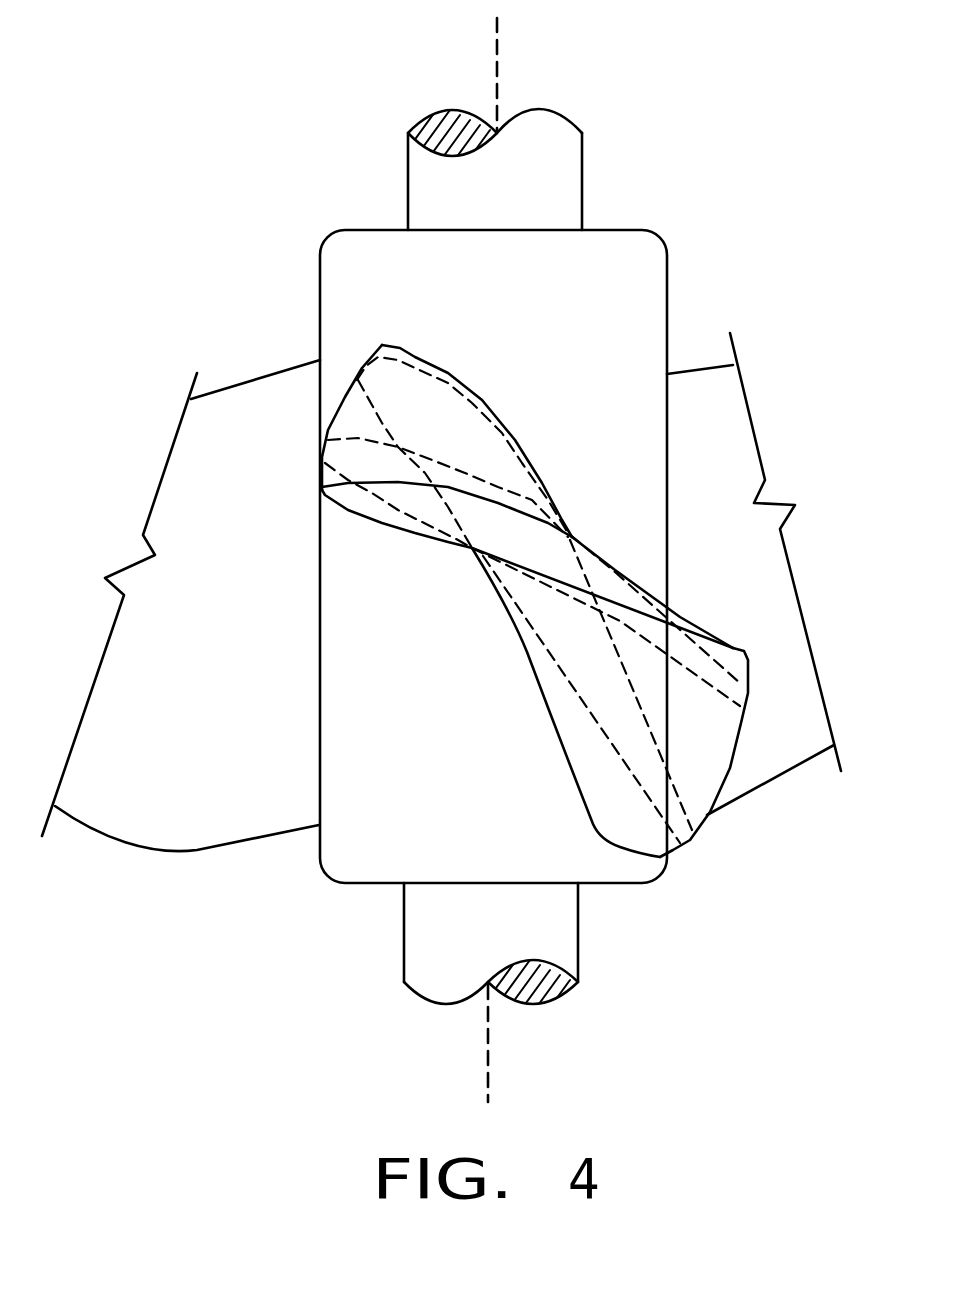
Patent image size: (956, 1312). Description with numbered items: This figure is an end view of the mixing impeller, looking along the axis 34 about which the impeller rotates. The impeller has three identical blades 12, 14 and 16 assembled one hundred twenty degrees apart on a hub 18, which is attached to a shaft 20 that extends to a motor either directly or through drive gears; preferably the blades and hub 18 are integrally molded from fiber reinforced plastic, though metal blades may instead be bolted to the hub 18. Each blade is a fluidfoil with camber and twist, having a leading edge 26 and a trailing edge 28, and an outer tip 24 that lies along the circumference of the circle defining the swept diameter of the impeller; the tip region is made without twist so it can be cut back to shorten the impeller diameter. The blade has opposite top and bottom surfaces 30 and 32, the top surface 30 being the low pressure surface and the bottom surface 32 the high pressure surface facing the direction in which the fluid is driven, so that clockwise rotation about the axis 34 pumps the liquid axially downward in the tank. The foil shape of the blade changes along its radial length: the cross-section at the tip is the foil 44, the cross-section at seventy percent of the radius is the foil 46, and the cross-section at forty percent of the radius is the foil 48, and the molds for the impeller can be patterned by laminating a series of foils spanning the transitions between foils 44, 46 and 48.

The blade 12 is at (726, 419).
The blade 14 is at (514, 593).
The blade 16 is at (202, 451).
The hub 18 is at (628, 282).
The shaft 20 is at (583, 165).
The tip 24 is at (428, 510).
The leading edge 26 is at (343, 393).
The trailing edge 28 is at (702, 828).
The top surface 30 is at (355, 420).
The bottom surface 32 is at (599, 768).
The axis 34 is at (497, 43).
The foil at the tips 44 is at (562, 540).
The foil at 0.7 R 46 is at (468, 485).
The foil at 0.4 R 48 is at (453, 435).